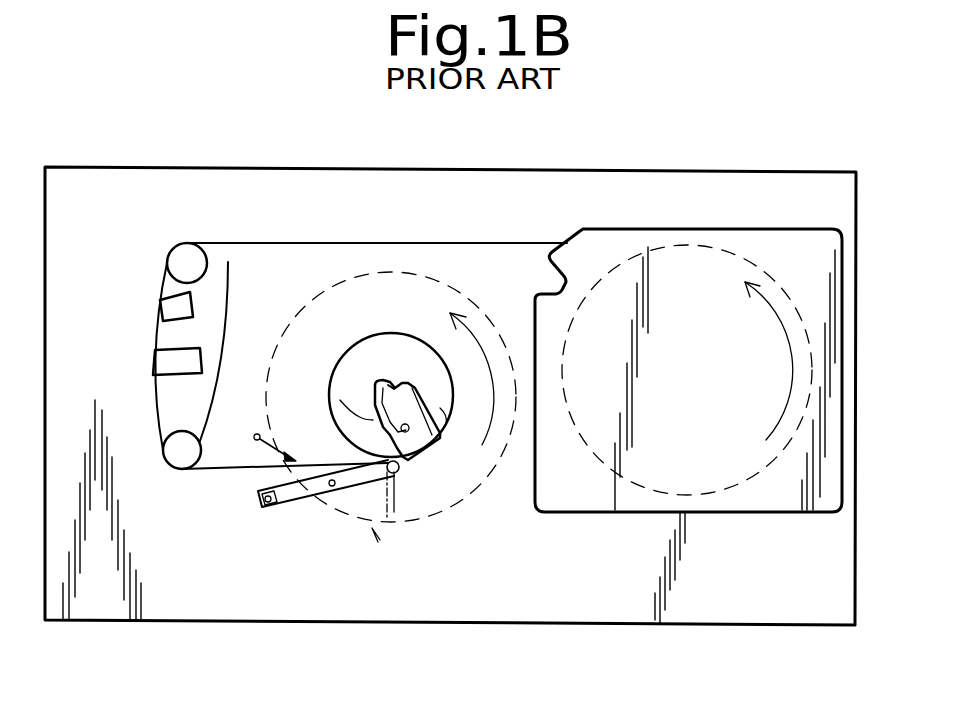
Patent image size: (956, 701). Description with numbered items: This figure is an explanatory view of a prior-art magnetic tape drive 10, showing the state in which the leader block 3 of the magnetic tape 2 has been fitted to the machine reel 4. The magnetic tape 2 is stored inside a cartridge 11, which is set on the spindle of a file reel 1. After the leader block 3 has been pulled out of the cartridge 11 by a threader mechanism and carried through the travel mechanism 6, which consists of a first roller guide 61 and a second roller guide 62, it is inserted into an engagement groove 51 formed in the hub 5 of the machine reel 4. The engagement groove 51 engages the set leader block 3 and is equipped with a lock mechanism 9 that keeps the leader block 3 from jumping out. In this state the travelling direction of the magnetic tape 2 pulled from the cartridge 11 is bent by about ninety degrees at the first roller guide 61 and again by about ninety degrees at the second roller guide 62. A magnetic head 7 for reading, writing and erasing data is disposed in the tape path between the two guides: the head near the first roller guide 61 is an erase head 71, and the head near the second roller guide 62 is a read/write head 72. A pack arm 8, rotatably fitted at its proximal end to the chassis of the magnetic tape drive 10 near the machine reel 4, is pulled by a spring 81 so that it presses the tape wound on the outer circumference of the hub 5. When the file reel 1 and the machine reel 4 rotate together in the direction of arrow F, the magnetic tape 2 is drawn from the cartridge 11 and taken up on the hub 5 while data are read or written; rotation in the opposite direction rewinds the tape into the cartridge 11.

The file reel 1 is at (688, 366).
The magnetic tape drive 10 is at (637, 606).
The cartridge 11 is at (784, 242).
The magnetic tape 2 is at (521, 242).
The leader block 3 is at (428, 452).
The machine reel 4 is at (376, 533).
The hub 5 is at (391, 366).
The engagement groove 51 is at (388, 385).
The travel mechanism 6 is at (217, 281).
The first roller guide 61 is at (187, 258).
The second roller guide 62 is at (228, 262).
The magnetic head 7 is at (127, 322).
The erase head 71 is at (165, 305).
The read/write head 72 is at (145, 356).
The pack arm 8 is at (324, 475).
The spring 81 is at (297, 455).
The lock mechanism 9 is at (340, 405).